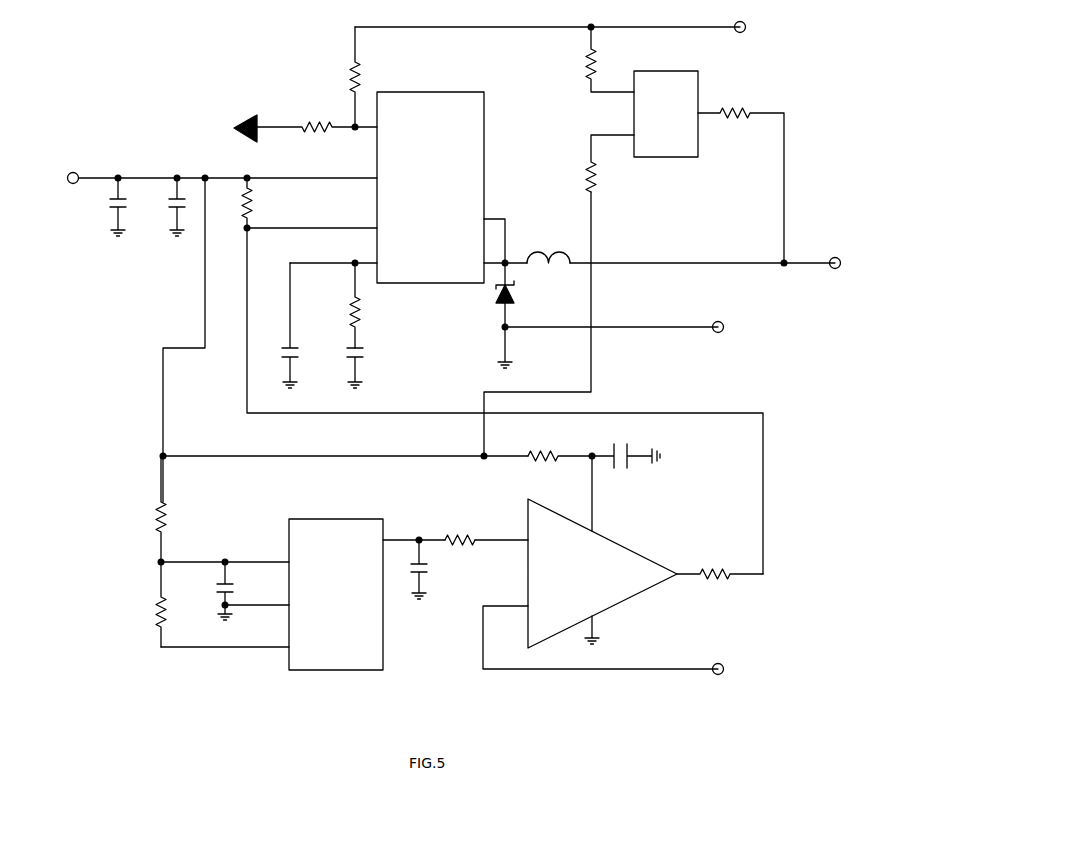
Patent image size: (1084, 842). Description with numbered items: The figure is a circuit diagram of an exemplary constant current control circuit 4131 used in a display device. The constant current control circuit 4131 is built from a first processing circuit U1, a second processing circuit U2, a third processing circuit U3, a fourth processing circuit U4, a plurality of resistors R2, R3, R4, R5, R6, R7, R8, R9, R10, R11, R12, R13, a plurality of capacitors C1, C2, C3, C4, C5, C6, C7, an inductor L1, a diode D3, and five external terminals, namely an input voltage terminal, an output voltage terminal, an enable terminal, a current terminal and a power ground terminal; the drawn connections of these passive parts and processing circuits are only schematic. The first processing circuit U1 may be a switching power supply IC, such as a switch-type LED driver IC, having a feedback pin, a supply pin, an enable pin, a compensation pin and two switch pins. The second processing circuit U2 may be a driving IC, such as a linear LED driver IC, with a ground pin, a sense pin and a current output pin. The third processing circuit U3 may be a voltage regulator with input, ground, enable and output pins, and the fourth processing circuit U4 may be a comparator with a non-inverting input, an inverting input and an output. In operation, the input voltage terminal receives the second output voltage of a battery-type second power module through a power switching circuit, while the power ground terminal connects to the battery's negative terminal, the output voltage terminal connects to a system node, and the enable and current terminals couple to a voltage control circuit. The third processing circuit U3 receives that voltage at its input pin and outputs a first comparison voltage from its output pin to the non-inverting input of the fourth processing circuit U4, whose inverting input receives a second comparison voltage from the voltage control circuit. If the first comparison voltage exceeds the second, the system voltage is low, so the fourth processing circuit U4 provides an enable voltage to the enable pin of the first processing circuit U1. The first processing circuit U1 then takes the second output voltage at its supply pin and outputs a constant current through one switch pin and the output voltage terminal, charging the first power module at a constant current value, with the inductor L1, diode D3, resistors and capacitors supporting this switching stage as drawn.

The constant current control circuit 4131 is at (163, 80).
The first processing circuit U1 is at (430, 176).
The second processing circuit U2 is at (666, 101).
The third processing circuit U3 is at (336, 582).
The fourth processing circuit U4 is at (602, 573).
The resistor R2 is at (262, 203).
The resistor R3 is at (305, 138).
The resistor R4 is at (343, 77).
The resistor R5 is at (366, 305).
The resistor R6 is at (594, 59).
The resistor R7 is at (594, 163).
The resistor R8 is at (741, 173).
The resistor R9 is at (144, 509).
The resistor R10 is at (139, 604).
The resistor R11 is at (560, 443).
The resistor R12 is at (463, 527).
The resistor R13 is at (720, 564).
The capacitor C1 is at (108, 207).
The capacitor C2 is at (166, 207).
The capacitor C3 is at (276, 325).
The capacitor C4 is at (340, 366).
The capacitor C5 is at (211, 591).
The capacitor C6 is at (433, 569).
The capacitor C7 is at (626, 446).
The inductor L1 is at (548, 247).
The diode D3 is at (522, 315).